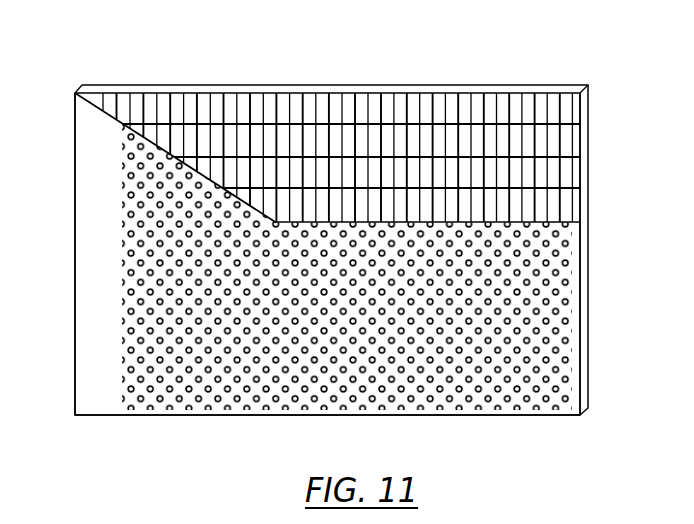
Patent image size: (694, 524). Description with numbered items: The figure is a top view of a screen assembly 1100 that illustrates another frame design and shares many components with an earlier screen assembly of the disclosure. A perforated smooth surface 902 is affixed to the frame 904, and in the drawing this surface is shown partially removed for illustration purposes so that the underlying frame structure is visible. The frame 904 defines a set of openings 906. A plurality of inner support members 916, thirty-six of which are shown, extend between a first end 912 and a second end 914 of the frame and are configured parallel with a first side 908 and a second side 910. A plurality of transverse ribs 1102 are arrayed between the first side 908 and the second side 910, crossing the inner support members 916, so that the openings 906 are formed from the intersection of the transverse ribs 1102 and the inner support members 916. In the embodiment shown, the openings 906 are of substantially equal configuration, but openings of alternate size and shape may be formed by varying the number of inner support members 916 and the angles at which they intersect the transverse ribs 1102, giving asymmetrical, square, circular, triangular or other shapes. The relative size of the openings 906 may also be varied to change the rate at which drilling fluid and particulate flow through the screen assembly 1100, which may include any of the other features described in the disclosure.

The screen assembly 1100 is at (536, 34).
The frame 904 is at (598, 100).
The perforated smooth surface 902 is at (75, 207).
The first side 908 is at (75, 352).
The first end 912 is at (120, 84).
The openings 906 is at (217, 102).
The inner support members 916 is at (421, 102).
The transverse ribs 1102 is at (565, 128).
The second side 910 is at (582, 351).
The second end 914 is at (483, 417).